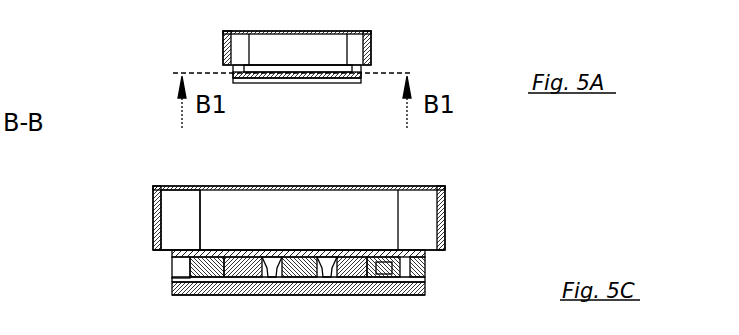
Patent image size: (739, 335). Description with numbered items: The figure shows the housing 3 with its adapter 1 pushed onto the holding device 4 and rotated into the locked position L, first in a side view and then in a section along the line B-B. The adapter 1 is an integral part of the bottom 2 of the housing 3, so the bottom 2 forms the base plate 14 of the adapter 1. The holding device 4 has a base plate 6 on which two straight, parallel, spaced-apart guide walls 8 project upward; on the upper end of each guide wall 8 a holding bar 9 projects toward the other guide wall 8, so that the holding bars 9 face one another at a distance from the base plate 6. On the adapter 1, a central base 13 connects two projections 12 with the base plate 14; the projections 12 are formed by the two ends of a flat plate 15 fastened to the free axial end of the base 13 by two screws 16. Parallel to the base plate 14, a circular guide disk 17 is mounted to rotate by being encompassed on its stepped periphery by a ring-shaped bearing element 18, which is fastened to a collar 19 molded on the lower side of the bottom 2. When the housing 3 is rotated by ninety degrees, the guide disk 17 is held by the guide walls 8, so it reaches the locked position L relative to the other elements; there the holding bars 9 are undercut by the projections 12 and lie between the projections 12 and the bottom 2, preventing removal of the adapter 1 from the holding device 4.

In FIG. 5A, the adapter 1 is at (297, 65).
In FIG. 5C, the bottom 2 is at (166, 250).
In FIG. 5A, the housing 3 is at (363, 47).
In FIG. 5C, the housing 3 is at (447, 200).
In FIG. 5A, the holding device 4 is at (303, 85).
In FIG. 5C, the holding device 4 is at (170, 290).
In FIG. 5C, the base plate 6 is at (430, 288).
In FIG. 5C, the guide walls 8 is at (237, 265).
In FIG. 5C, the holding bars 9 is at (240, 257).
In FIG. 5C, the projections 12 is at (241, 265).
In FIG. 5C, the base 13 is at (299, 250).
In FIG. 5C, the base plate 14 is at (236, 244).
In FIG. 5C, the flat plate 15 is at (310, 280).
In FIG. 5C, the screws 16 is at (271, 250).
In FIG. 5C, the guide disk 17 is at (383, 262).
In FIG. 5C, the bearing element 18 is at (430, 268).
In FIG. 5C, the collar 19 is at (178, 262).
In FIG. 5C, the locked position L is at (444, 260).